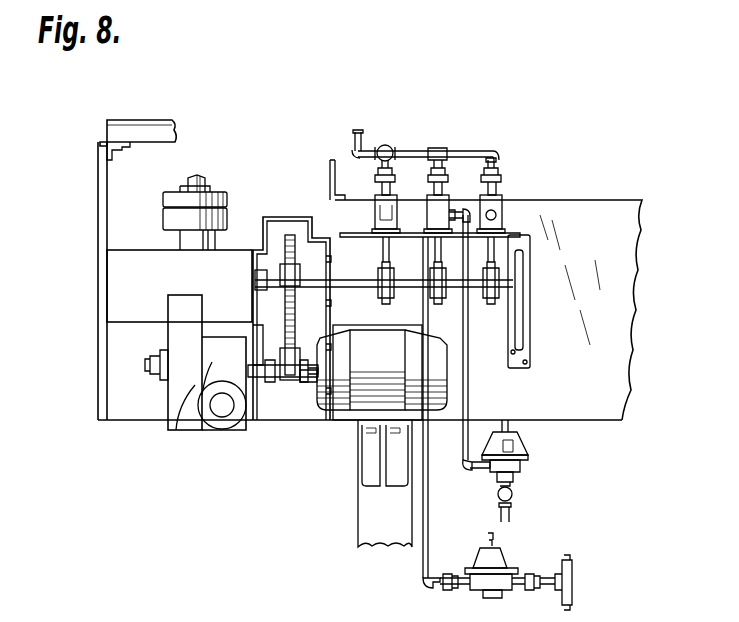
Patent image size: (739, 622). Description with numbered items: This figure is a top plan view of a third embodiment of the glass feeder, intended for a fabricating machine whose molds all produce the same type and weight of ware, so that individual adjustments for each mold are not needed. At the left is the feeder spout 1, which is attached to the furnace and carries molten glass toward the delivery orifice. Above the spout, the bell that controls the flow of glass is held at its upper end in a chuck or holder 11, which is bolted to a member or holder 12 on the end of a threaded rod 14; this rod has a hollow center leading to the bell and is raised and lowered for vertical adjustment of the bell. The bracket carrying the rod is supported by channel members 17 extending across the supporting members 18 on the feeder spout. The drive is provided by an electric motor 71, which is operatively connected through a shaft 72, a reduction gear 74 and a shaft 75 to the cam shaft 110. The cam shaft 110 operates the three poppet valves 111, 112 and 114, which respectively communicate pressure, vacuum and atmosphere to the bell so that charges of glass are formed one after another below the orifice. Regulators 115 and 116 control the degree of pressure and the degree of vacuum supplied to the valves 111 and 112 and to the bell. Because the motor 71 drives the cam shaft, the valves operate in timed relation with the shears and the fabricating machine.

The feeder spout 1 is at (108, 286).
The chuck or holder 11 is at (228, 217).
The member or holder 12 is at (228, 199).
The threaded rod 14 is at (204, 180).
The channel members 17 is at (176, 130).
The supporting members 18 is at (98, 214).
The electric motor 71 is at (352, 400).
The shaft 72 is at (252, 412).
The reduction gear 74 is at (182, 415).
The shaft 75 is at (262, 360).
The cam shaft 110 is at (362, 275).
The poppet valve 111 is at (397, 212).
The poppet valve 112 is at (450, 212).
The poppet valve 114 is at (504, 210).
The regulator 115 is at (503, 555).
The regulator 116 is at (520, 440).